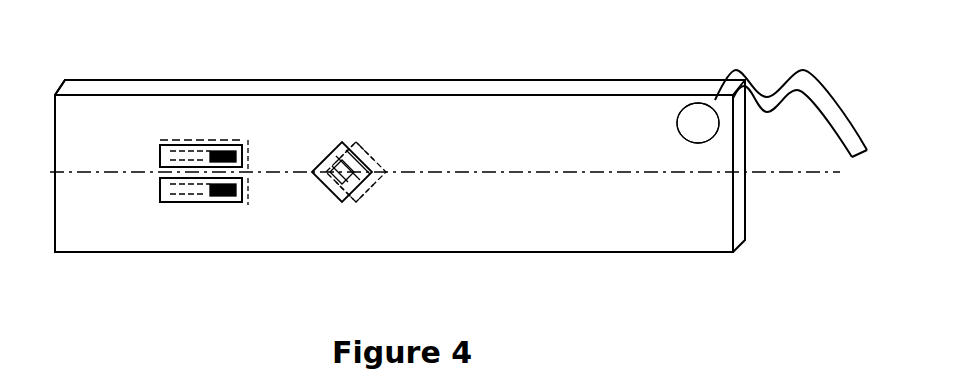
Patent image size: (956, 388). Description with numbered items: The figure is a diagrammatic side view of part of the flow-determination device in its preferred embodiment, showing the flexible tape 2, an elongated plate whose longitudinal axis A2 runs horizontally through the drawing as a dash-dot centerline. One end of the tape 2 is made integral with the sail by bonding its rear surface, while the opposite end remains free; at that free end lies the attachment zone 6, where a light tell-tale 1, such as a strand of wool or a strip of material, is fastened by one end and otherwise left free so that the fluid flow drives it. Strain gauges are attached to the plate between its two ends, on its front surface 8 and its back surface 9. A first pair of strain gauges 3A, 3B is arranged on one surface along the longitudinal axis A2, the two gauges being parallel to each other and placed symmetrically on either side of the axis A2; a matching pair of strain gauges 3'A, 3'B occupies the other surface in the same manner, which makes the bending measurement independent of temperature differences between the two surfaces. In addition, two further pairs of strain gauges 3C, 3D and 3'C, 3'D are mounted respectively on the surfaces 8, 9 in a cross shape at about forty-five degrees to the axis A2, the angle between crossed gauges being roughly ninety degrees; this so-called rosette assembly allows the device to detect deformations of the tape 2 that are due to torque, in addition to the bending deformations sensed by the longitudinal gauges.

The tell-tale 1 is at (768, 97).
The flexible tape 2 is at (457, 115).
The attachment zone 6 is at (700, 140).
The front surface 8 is at (127, 112).
The back surface 9 is at (237, 80).
The strain gauge 3A is at (166, 204).
The strain gauge 3B is at (166, 146).
The strain gauge 3'A is at (248, 213).
The strain gauge 3'B is at (258, 136).
The additional strain gauge 3C is at (320, 200).
The additional strain gauge 3D is at (338, 146).
The additional strain gauge 3'C is at (363, 129).
The additional strain gauge 3'D is at (364, 216).
The longitudinal axis A2 is at (627, 173).